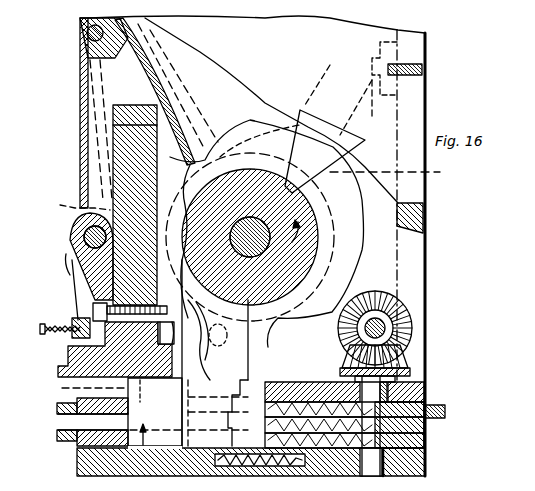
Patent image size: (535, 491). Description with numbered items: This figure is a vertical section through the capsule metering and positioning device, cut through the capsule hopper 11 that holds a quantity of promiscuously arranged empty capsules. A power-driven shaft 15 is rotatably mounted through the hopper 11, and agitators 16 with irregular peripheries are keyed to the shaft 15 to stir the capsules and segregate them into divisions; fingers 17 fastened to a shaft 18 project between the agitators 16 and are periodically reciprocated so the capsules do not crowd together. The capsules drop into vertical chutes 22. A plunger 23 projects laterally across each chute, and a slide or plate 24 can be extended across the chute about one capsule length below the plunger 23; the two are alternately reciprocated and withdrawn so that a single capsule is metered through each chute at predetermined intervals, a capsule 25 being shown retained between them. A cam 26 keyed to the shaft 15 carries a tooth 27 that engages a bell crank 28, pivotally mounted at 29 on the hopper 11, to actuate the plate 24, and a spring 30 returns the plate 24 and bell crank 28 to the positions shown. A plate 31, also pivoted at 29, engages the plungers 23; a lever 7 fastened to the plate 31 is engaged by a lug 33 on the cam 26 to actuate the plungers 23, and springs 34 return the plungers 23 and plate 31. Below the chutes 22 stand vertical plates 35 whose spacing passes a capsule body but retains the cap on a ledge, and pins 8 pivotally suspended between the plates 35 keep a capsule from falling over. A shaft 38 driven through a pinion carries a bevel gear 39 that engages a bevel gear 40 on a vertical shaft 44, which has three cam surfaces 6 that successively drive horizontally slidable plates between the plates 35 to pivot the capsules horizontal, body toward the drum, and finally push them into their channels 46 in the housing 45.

The cam surfaces 6 is at (445, 412).
The lever 7 is at (218, 335).
The pins 8 is at (86, 389).
The capsule hopper 11 is at (420, 46).
The shaft 15 is at (230, 237).
The agitators 16 is at (318, 122).
The fingers 17 is at (190, 135).
The shaft 18 is at (87, 40).
The vertical chutes 22 is at (215, 353).
The plunger 23 is at (230, 408).
The slide (plate) 24 is at (58, 372).
The capsule 25 is at (185, 372).
The cam 26 is at (394, 173).
The tooth 27 is at (272, 100).
The bell crank 28 is at (69, 201).
The pivot 29 is at (78, 236).
The spring 30 is at (57, 320).
The plate 31 is at (70, 258).
The lug 33 is at (180, 190).
The springs 34 is at (100, 300).
The vertical plates 35 is at (235, 470).
The shaft 38 is at (380, 322).
The bevel gear 39 is at (408, 350).
The bevel gear 40 is at (395, 366).
The vertical shaft 44 is at (425, 464).
The housing 45 is at (56, 438).
The channels 46 is at (60, 422).